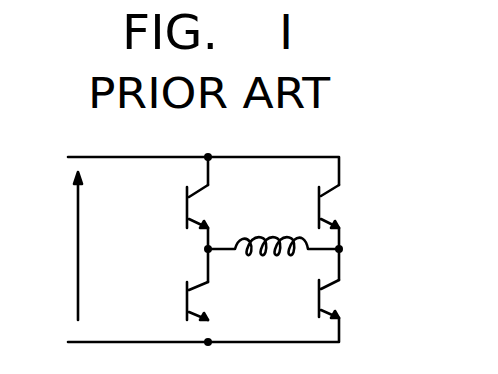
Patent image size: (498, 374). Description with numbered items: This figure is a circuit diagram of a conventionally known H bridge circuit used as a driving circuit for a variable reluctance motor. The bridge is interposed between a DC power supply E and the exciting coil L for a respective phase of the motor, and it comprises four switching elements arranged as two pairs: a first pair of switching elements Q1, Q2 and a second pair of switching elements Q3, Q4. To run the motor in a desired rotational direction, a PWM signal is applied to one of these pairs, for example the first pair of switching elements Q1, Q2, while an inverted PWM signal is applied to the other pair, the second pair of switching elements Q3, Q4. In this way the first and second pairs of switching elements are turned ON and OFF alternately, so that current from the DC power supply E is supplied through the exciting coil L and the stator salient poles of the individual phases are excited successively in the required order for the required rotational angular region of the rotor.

The switching element Q1 is at (175, 206).
The switching element Q2 is at (351, 299).
The switching element Q3 is at (349, 206).
The switching element Q4 is at (175, 301).
The exciting coil L is at (268, 258).
The DC power supply E is at (65, 246).